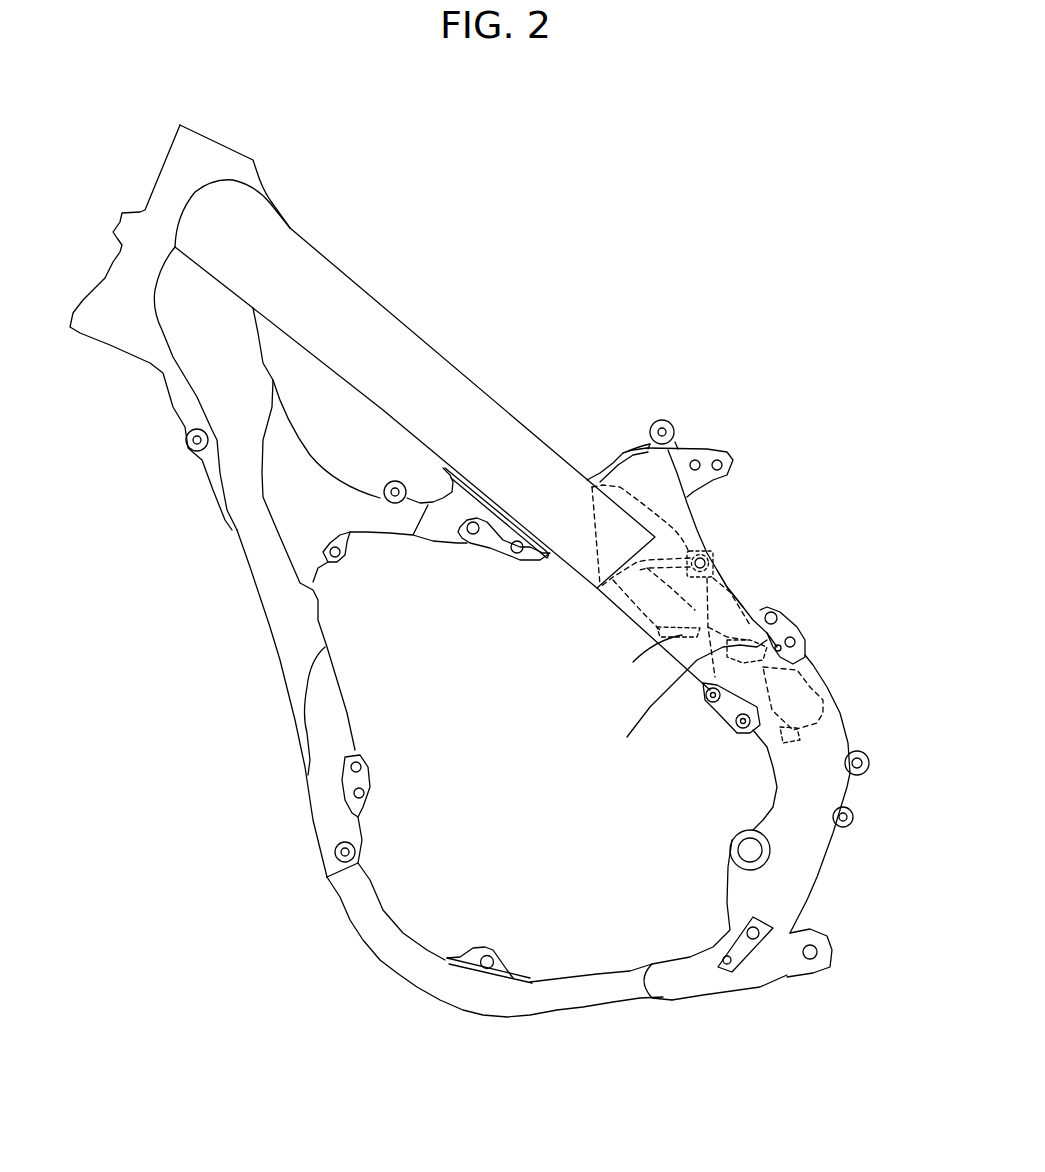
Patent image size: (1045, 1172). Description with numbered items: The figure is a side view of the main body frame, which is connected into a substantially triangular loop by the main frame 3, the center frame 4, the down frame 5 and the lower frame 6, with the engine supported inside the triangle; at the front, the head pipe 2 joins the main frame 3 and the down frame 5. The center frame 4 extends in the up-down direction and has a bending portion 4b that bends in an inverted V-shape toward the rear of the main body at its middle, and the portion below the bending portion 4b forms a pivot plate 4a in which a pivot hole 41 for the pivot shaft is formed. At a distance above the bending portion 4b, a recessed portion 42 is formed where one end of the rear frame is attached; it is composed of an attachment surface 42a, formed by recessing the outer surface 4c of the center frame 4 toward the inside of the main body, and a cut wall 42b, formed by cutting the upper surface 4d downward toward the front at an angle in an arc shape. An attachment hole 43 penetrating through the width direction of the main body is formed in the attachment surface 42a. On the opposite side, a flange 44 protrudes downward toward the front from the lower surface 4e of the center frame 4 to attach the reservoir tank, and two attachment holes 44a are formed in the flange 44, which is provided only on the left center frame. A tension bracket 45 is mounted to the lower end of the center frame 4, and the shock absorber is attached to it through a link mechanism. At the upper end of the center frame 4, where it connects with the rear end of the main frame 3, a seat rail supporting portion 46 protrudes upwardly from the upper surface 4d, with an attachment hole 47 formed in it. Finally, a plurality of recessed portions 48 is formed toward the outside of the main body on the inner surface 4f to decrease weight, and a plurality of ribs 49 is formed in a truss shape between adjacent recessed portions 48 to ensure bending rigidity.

The head pipe 2 is at (142, 232).
The main frame 3 is at (395, 340).
The center frame 4 is at (723, 580).
The pivot plate 4a is at (833, 805).
The bending portion 4b is at (840, 728).
The outer surface 4c is at (683, 510).
The upper surface 4d is at (757, 592).
The lower surface 4e is at (593, 590).
The inner surface 4f is at (690, 622).
The down frame 5 is at (262, 610).
The lower frame 6 is at (552, 1003).
The pivot hole 41 is at (757, 852).
The recessed portion 42 is at (787, 617).
The attachment surface 42a is at (798, 635).
The cut wall 42b is at (640, 720).
The attachment hole 43 is at (795, 640).
The flange 44 is at (727, 713).
The attachment holes 44a is at (707, 693).
The tension bracket 45 is at (800, 973).
The seat rail supporting portion 46 is at (647, 443).
The attachment hole 47 is at (663, 428).
The recessed portions 48 is at (672, 650).
The ribs 49 is at (653, 678).